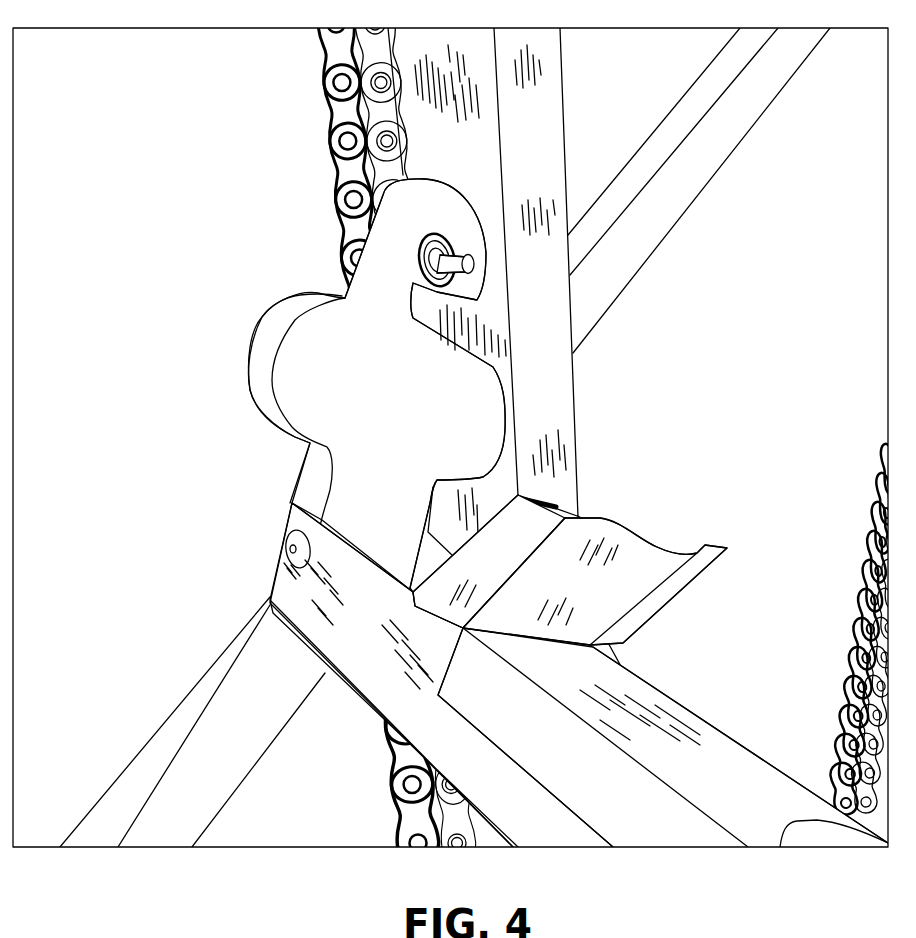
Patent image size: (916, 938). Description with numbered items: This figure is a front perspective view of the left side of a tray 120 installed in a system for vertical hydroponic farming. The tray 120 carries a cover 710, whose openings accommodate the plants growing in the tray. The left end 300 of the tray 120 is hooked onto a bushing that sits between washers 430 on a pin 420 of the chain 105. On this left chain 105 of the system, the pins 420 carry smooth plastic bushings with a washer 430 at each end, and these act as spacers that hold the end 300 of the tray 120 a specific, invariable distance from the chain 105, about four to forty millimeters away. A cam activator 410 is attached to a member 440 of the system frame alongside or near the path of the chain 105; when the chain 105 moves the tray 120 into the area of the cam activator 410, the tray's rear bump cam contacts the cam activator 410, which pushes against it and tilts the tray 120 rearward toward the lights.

The chain 105 is at (320, 136).
The left end 300 is at (287, 267).
The washers 430 is at (447, 234).
The pin 420 is at (474, 265).
The cam activator 410 is at (555, 405).
The member of the frame 440 is at (205, 692).
The tray 120 is at (388, 679).
The cover 710 is at (675, 727).